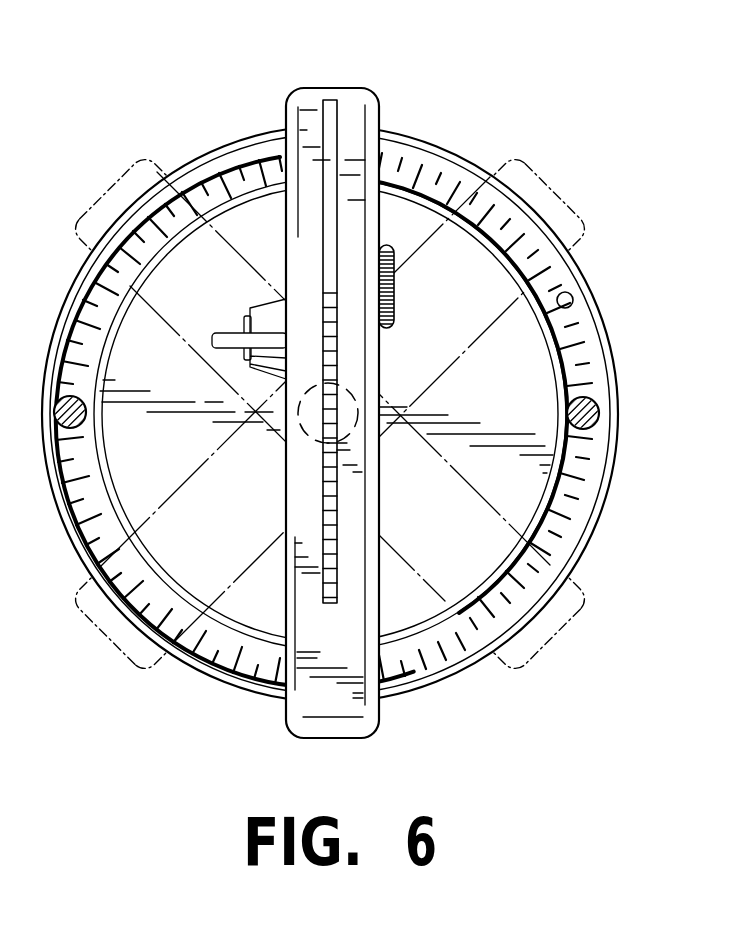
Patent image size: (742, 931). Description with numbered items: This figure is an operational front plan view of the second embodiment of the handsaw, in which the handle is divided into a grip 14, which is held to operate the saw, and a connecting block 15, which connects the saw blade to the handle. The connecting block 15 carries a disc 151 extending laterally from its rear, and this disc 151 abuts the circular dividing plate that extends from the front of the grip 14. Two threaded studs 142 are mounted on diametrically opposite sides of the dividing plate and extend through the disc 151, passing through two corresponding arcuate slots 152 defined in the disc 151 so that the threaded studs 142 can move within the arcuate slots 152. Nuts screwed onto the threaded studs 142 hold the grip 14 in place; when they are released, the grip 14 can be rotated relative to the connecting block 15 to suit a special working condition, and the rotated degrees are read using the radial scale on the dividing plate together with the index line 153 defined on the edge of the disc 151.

The grip 14 is at (549, 190).
The connecting block 15 is at (350, 113).
The threaded studs 142 is at (594, 409).
The disc 151 is at (236, 146).
The arcuate slots 152 is at (585, 297).
The index line 153 is at (599, 418).